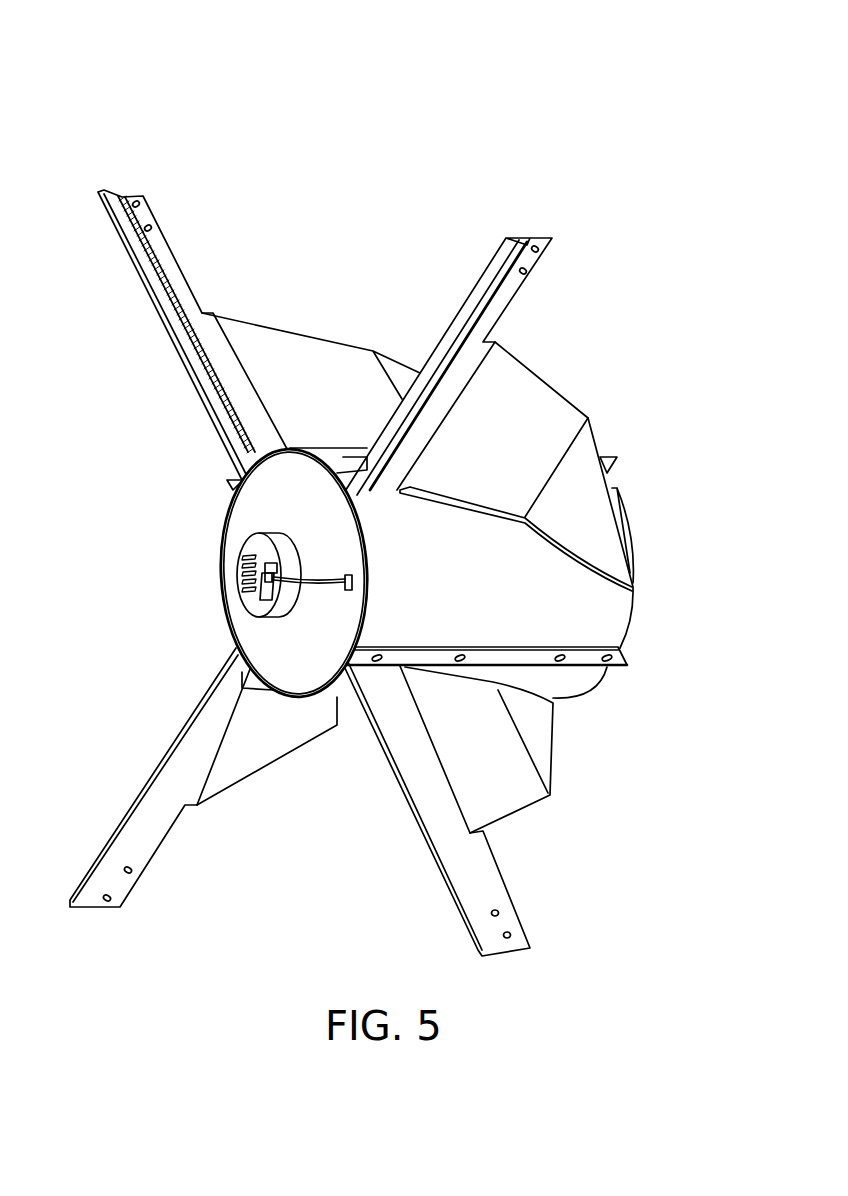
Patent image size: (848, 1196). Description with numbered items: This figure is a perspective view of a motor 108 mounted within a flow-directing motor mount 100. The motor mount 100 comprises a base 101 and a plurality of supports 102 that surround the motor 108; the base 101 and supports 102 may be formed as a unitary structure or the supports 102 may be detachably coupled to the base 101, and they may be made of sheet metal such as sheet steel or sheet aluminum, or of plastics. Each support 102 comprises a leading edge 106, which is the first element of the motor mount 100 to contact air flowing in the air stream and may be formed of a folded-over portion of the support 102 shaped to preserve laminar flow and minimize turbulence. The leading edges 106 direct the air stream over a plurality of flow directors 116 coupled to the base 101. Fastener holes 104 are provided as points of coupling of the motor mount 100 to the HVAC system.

The flow-directing motor mount 100 is at (377, 524).
The base 101 is at (607, 608).
The support 102 is at (177, 283).
The fastener hole 104 is at (617, 653).
The leading edge 106 is at (138, 267).
The motor 108 is at (258, 606).
The flow director 116 is at (295, 358).